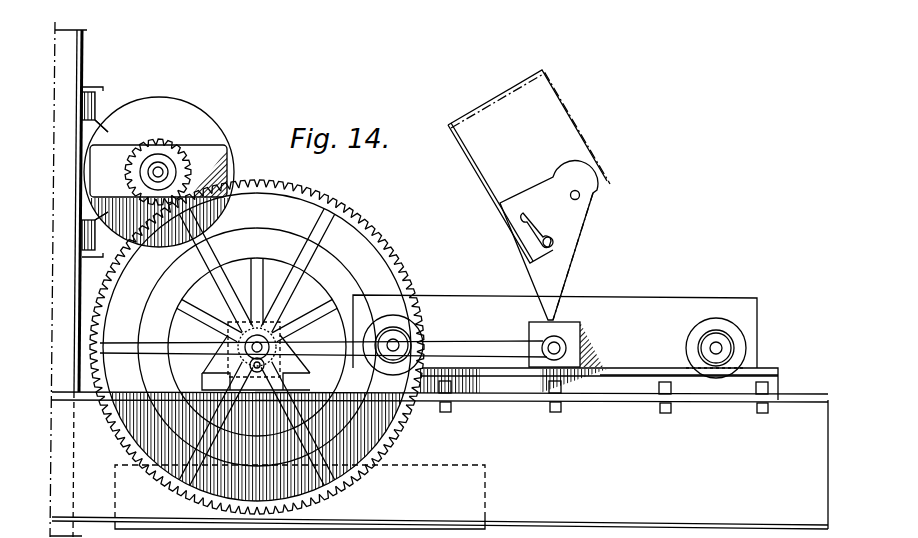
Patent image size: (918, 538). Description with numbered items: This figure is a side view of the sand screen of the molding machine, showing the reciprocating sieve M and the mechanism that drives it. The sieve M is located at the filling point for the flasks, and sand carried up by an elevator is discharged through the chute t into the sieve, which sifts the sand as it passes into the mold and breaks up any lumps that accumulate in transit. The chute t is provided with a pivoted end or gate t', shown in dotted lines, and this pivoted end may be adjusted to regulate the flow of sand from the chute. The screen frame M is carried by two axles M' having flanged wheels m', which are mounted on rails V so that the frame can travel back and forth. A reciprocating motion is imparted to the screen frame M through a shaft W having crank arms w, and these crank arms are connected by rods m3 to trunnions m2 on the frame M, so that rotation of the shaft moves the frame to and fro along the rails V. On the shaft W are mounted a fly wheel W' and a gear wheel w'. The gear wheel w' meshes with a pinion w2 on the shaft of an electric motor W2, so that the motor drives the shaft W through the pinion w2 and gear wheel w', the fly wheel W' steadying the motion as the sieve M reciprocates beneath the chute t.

The electric motor W2 is at (197, 122).
The pinion w2 is at (152, 162).
The fly wheel W' is at (257, 348).
The gear wheel w' is at (257, 347).
The shaft W is at (248, 356).
The crank arms w is at (258, 392).
The chute t is at (529, 166).
The pivoted end or gate t' is at (549, 240).
The reciprocating sieve M is at (555, 319).
The flanged wheels m' is at (554, 342).
The axles M' is at (700, 354).
The trunnions m2 is at (566, 340).
The rods m3 is at (489, 347).
The rails V is at (606, 377).